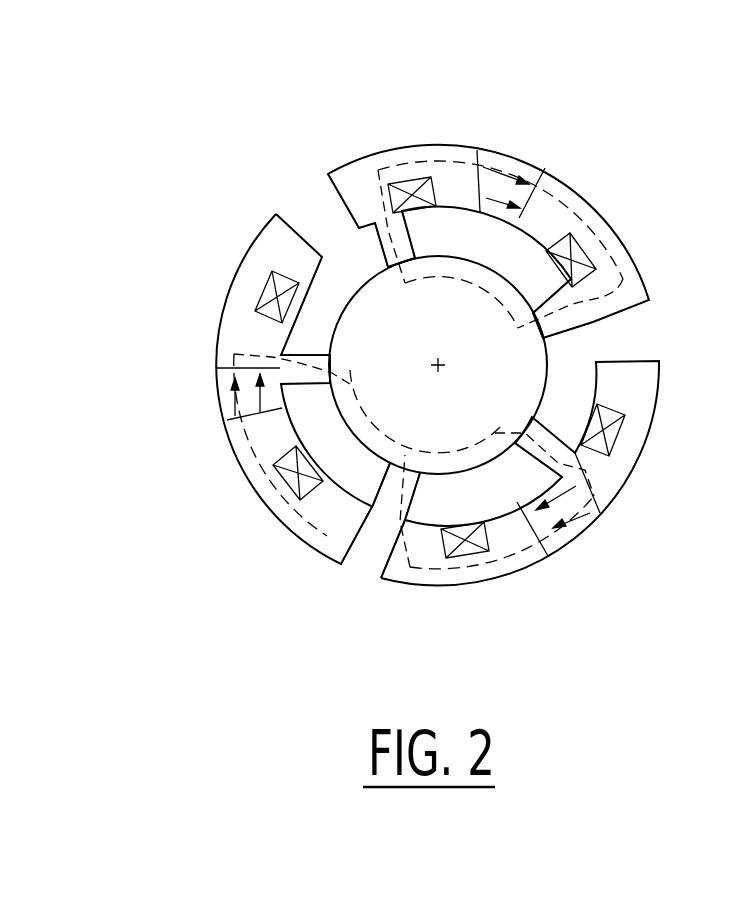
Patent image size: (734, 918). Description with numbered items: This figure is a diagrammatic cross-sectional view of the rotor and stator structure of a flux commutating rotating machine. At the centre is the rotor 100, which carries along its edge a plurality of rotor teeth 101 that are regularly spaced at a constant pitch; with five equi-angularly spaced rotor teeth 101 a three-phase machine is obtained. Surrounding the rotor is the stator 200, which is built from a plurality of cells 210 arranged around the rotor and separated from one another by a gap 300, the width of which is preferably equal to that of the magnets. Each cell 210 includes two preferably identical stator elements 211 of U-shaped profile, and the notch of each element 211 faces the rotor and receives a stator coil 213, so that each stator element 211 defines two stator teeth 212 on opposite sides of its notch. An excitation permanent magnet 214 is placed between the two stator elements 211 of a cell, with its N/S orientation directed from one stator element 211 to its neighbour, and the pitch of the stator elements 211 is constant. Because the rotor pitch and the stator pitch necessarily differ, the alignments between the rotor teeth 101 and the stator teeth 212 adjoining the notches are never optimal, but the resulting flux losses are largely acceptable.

The rotor 100 is at (463, 340).
The rotor teeth 101 is at (538, 287).
The stator 200 is at (213, 258).
The cell 210 is at (415, 127).
The stator element 211 is at (353, 168).
The stator teeth 212 is at (460, 205).
The stator coil 213 is at (427, 177).
The excitation permanent magnet 214 is at (522, 166).
The gap 300 is at (371, 545).